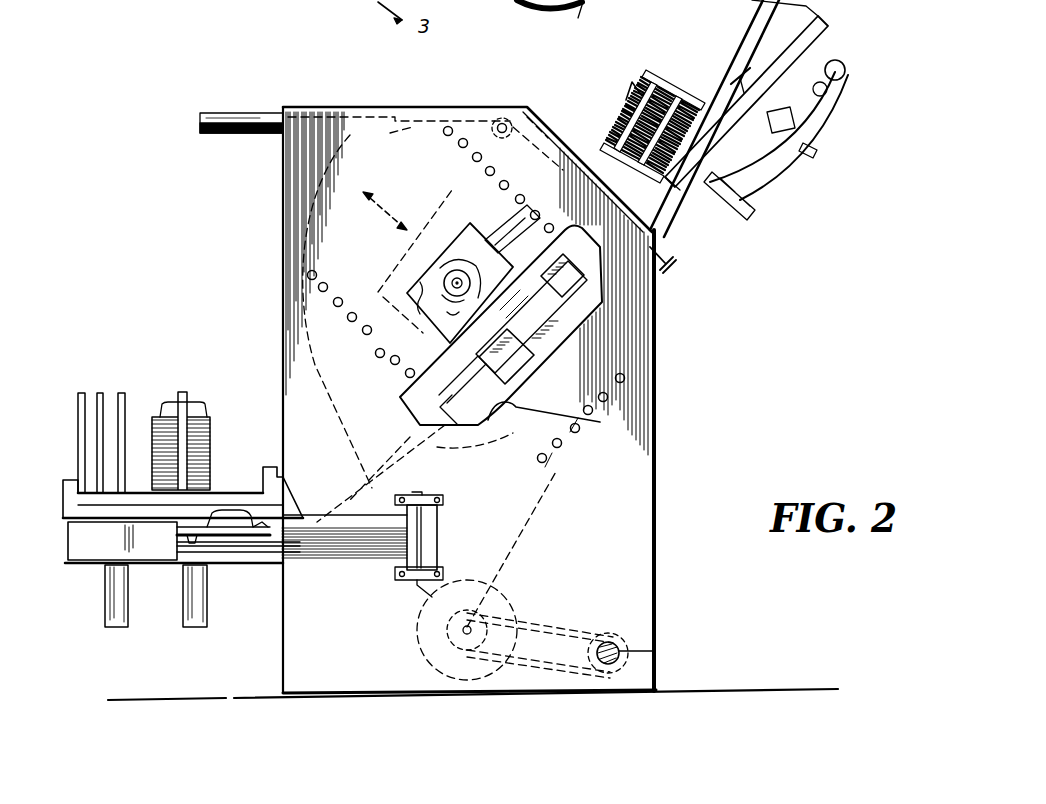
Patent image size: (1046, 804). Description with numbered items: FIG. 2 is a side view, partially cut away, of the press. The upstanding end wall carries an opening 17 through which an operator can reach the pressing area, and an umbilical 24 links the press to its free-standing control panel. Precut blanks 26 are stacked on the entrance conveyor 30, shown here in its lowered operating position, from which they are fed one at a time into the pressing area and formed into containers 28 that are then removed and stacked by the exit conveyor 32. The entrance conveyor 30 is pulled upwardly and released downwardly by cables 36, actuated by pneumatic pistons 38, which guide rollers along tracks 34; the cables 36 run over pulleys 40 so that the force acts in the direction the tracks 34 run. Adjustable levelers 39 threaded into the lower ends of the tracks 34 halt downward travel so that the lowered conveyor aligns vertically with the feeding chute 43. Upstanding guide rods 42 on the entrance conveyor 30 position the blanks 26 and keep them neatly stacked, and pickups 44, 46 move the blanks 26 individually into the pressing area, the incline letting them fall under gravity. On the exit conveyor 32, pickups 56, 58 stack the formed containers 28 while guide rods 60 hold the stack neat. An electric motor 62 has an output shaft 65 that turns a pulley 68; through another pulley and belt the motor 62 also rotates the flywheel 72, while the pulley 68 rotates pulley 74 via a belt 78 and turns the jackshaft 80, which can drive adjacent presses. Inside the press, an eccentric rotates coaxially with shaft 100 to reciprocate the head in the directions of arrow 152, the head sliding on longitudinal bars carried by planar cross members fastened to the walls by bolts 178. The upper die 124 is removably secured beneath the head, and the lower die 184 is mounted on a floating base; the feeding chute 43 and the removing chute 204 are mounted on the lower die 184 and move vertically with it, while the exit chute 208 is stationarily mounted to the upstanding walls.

The opening 17 is at (600, 422).
The umbilical 24 is at (565, 18).
The blanks 26 is at (669, 88).
The containers 28 is at (233, 510).
The entrance conveyor 30 is at (862, 33).
The exit conveyor 32 is at (152, 620).
The tracks 34 is at (513, 107).
The cables 36 is at (413, 114).
The pneumatic pistons 38 is at (233, 136).
The adjustable levelers 39 is at (675, 261).
The pulleys 40 is at (505, 139).
The guide rods 42 is at (647, 92).
The feeding chute 43 is at (513, 297).
The pickup 44 is at (747, 213).
The pickup 46 is at (807, 146).
The pickup 56 is at (193, 617).
The pickup 58 is at (112, 608).
The guide rods 60 is at (123, 396).
The electric motor 62 is at (513, 603).
The output shaft 65 is at (512, 548).
The pulley 68 is at (420, 622).
The flywheel 72 is at (373, 163).
The pulley 74 is at (617, 637).
The belt 78 is at (563, 627).
The jackshaft 80 is at (655, 651).
The shaft 100 is at (440, 287).
The upper die 124 is at (575, 292).
The arrow 152 is at (418, 195).
The bolts 178 is at (458, 145).
The lower die 184 is at (547, 347).
The exit chute 204 is at (487, 392).
The exit chute 208 is at (353, 490).